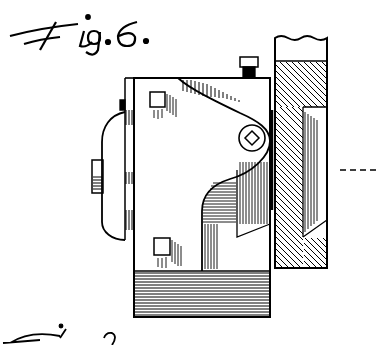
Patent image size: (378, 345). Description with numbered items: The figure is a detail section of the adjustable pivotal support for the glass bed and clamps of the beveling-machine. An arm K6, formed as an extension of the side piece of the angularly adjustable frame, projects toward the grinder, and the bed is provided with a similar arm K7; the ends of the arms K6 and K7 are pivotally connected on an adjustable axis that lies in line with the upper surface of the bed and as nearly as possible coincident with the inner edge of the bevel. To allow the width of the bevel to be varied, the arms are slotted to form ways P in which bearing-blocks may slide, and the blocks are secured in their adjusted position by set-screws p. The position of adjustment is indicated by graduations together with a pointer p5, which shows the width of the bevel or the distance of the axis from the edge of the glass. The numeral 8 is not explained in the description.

The arm K6 is at (188, 57).
The arm K7 is at (327, 75).
The set-screw p is at (250, 53).
The pointer p5 is at (121, 101).
The way P is at (333, 238).
The housing 8 is at (88, 177).